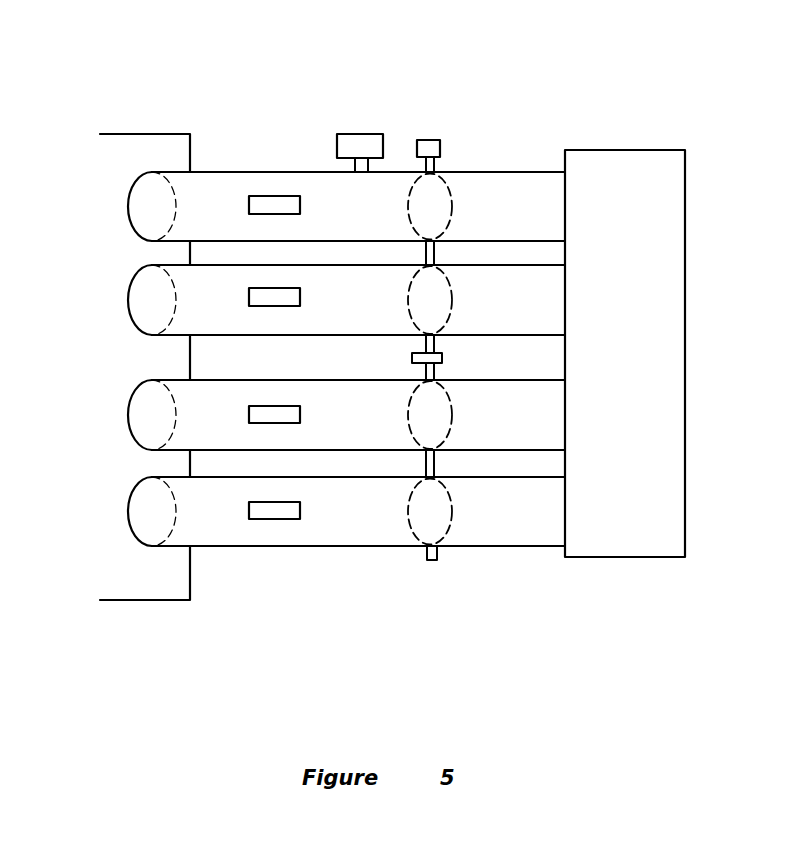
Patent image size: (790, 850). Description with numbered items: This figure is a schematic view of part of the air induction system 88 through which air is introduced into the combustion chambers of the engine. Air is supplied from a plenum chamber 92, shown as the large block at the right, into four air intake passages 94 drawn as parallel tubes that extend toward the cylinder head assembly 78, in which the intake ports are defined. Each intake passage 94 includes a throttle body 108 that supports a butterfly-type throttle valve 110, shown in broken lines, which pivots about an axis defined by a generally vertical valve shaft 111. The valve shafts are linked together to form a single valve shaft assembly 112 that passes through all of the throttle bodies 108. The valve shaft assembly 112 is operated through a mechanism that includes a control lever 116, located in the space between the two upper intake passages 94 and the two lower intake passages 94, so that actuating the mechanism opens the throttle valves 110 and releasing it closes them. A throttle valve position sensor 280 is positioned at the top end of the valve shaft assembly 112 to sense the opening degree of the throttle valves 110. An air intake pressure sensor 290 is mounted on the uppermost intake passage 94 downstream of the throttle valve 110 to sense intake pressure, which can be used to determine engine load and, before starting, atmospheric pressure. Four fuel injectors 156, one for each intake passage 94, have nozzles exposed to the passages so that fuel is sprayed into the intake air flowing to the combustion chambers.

The cylinder head assembly 78 is at (137, 152).
The air intake passage 94 is at (220, 188).
The air intake pressure sensor 290 is at (353, 147).
The throttle valve position sensor 280 is at (430, 147).
The valve shaft 111 is at (433, 167).
The throttle body 108 is at (535, 172).
The plenum chamber 92 is at (627, 172).
The air induction system 88 is at (712, 122).
The fuel injector 156 is at (270, 207).
The throttle valve 110 is at (452, 207).
The control lever 116 is at (412, 357).
The valve shaft assembly 112 is at (423, 550).